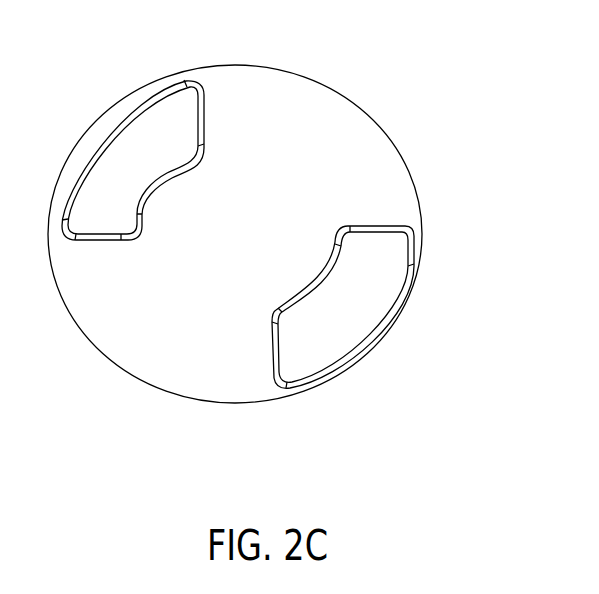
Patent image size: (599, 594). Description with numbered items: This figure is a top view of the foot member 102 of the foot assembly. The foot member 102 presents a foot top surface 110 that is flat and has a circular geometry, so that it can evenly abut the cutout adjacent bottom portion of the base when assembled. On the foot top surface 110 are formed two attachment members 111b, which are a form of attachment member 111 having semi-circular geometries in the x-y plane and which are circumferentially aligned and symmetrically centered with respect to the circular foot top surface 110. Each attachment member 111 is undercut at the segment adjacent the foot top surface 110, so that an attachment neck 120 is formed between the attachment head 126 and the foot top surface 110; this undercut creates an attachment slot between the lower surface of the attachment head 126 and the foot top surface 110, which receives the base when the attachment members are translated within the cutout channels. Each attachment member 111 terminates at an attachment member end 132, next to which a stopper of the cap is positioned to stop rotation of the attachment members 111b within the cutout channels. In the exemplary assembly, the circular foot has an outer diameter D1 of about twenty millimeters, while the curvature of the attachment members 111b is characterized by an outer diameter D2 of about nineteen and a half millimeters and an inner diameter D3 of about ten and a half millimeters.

The foot member 102 is at (253, 238).
The foot top surface 110 is at (250, 247).
The attachment member 111 is at (270, 234).
The attachment members 111b is at (233, 248).
The attachment neck 120 is at (382, 225).
The attachment head 126 is at (85, 132).
The attachment member end 132 is at (207, 66).
The outer diameter D1 is at (328, 83).
The outer diameter D2 is at (407, 302).
The inner diameter D3 is at (203, 172).